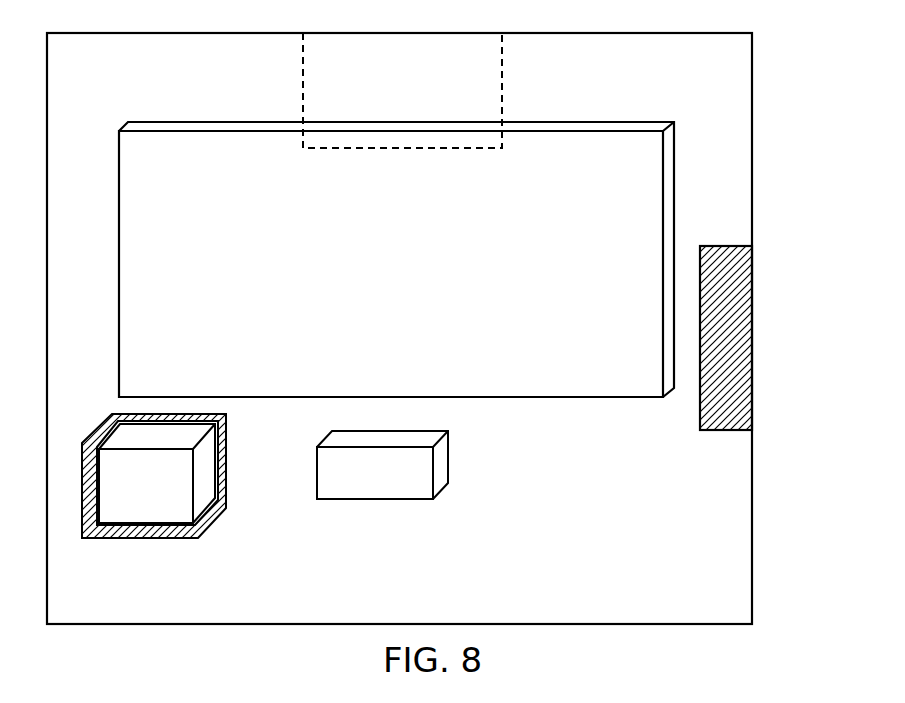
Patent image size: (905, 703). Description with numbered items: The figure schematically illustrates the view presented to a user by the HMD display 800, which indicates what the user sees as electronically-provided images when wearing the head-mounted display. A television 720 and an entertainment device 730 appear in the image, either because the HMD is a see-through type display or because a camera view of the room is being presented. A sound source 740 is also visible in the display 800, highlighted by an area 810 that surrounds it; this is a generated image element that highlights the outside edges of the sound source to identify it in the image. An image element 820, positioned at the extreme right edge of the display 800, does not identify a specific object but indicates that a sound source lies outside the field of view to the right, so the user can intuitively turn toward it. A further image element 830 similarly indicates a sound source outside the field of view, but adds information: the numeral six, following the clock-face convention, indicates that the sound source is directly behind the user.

The HMD display 800 is at (752, 212).
The television 720 is at (650, 122).
The battery 730 is at (375, 500).
The sound source 740 is at (208, 477).
The area 810 is at (152, 538).
The image element 820 is at (714, 446).
The image element 830 is at (501, 92).